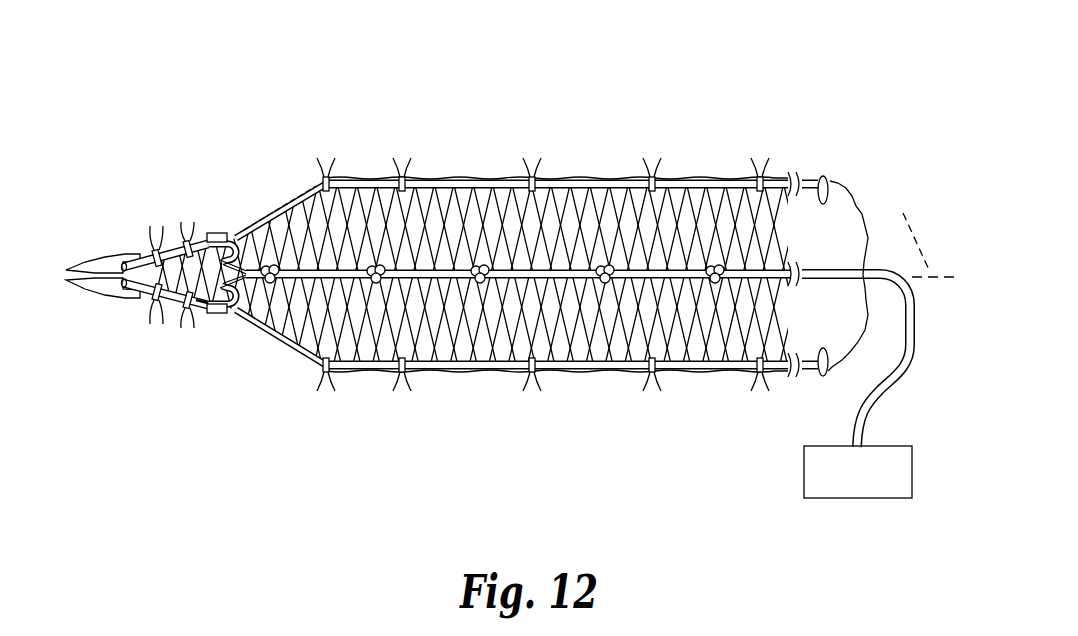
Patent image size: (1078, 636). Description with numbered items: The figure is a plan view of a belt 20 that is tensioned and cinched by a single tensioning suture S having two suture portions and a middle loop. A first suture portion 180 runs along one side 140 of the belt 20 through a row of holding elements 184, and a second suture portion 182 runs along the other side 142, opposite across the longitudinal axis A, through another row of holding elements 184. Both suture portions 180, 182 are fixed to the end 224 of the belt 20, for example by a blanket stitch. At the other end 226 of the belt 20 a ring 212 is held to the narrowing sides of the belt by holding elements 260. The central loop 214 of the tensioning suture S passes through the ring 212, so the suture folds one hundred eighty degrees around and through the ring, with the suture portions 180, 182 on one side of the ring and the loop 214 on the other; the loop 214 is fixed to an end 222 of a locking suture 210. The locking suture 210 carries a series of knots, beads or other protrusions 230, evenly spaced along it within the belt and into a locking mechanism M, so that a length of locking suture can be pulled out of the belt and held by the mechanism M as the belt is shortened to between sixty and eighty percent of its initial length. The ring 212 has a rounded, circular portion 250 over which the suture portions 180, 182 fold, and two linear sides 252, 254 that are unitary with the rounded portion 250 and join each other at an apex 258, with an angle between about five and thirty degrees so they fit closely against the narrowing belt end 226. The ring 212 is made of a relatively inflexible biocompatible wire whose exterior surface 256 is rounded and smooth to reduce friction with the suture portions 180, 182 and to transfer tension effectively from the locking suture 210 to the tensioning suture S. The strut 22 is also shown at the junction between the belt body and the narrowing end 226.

The belt 20 is at (538, 80).
The strut 22 is at (322, 180).
The tensioning suture S is at (250, 222).
The side 140 is at (432, 183).
The side 142 is at (430, 366).
The suture portion 180 is at (615, 184).
The suture portion 182 is at (612, 370).
The holding elements 184 is at (323, 155).
The locking suture 210 is at (566, 276).
The ring 212 is at (230, 306).
The central loop 214 is at (258, 281).
The end 222 is at (292, 343).
The end 224 is at (873, 192).
The end 226 is at (85, 225).
The protrusions 230 is at (479, 268).
The rounded portion 250 is at (230, 233).
The side 252 is at (136, 259).
The side 254 is at (138, 287).
The exterior surface 256 is at (200, 306).
The apex 258 is at (82, 283).
The holding elements 260 is at (152, 218).
The longitudinal axis A is at (926, 232).
The locking mechanism M is at (857, 490).